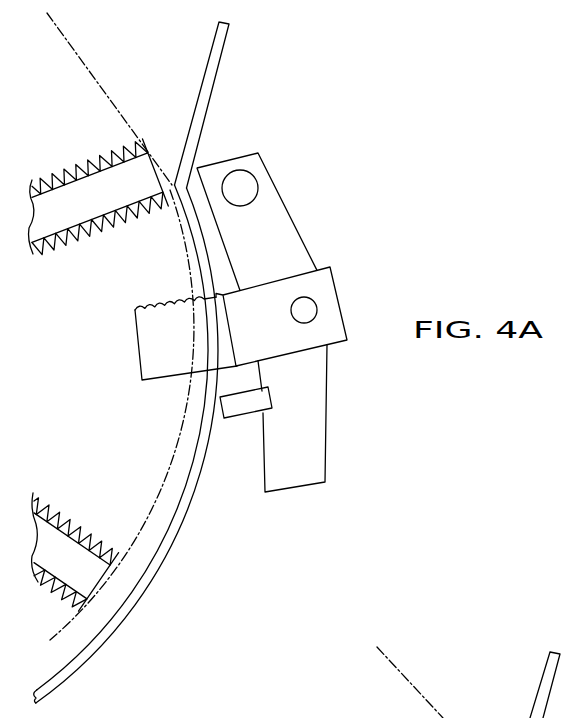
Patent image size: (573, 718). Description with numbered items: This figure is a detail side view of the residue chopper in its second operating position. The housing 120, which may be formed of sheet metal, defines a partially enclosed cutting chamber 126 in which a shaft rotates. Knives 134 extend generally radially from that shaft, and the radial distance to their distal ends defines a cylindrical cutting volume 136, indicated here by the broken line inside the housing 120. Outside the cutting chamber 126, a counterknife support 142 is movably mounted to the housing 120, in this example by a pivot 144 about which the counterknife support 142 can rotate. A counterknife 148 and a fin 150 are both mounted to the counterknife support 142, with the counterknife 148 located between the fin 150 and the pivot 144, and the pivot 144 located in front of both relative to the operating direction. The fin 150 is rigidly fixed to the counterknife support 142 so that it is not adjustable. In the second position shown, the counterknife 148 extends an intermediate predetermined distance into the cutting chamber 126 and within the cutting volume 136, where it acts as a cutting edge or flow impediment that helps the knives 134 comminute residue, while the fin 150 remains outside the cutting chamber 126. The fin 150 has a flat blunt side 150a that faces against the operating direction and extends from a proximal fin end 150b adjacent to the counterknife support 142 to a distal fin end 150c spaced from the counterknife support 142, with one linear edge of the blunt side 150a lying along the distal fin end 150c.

The housing 120 is at (175, 545).
The cutting chamber 126 is at (146, 283).
The knives 134 is at (100, 188).
The cutting volume 136 is at (82, 43).
The counterknife support 142 is at (272, 252).
The pivot 144 is at (245, 187).
The counterknife 148 is at (155, 332).
The fin 150 is at (237, 408).
The blunt side 150a is at (263, 390).
The proximal fin end 150b is at (267, 388).
The distal fin end 150c is at (220, 400).